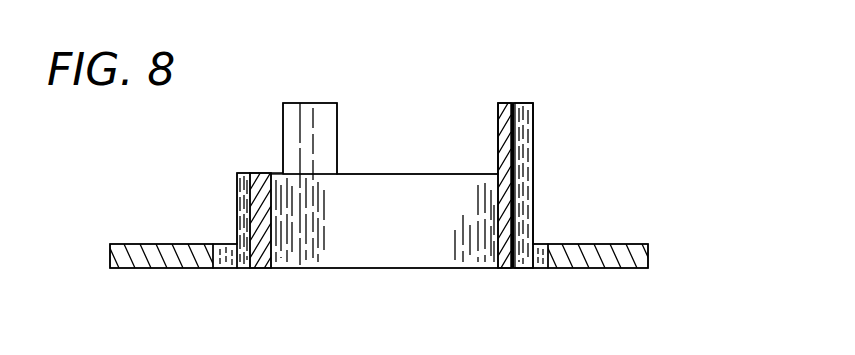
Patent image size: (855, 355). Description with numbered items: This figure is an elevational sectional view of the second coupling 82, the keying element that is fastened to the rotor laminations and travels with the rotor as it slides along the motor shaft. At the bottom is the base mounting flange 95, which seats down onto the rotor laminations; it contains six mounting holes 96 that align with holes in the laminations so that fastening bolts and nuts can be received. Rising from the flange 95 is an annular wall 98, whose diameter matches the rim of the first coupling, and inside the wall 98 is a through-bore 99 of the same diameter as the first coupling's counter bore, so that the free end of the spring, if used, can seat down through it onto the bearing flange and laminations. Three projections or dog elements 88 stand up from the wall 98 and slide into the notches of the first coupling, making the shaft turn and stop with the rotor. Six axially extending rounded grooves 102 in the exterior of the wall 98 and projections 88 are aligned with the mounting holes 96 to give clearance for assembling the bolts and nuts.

The second coupling 82 is at (623, 112).
The projection or dog element 88 is at (312, 103).
The base mounting flange 95 is at (630, 244).
The mounting hole 96 is at (226, 243).
The annular wall 98 is at (263, 173).
The through-bore 99 is at (310, 243).
The rounded groove 102 is at (238, 198).